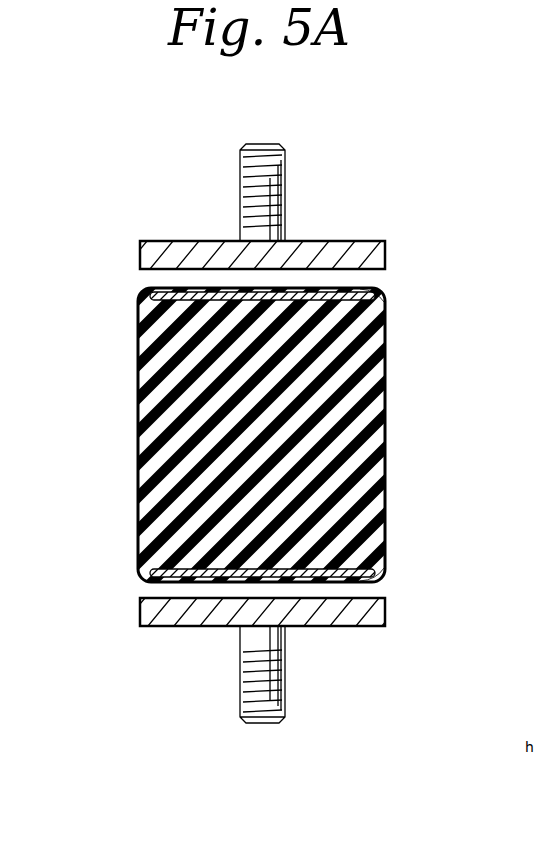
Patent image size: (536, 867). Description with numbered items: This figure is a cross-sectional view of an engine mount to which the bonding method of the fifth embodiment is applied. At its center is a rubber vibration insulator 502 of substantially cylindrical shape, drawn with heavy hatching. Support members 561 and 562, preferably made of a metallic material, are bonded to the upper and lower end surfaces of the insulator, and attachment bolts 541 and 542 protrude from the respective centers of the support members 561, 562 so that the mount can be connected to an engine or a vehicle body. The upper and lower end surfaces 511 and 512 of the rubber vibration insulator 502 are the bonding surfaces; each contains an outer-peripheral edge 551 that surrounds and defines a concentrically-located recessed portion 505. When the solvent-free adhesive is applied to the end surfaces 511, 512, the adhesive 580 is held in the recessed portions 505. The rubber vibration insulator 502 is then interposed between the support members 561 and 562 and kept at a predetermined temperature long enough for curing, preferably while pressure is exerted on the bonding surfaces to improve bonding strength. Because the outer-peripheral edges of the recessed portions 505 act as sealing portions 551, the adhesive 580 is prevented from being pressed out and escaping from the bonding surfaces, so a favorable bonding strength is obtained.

The attachment bolt 541 is at (262, 144).
The attachment bolt 542 is at (262, 724).
The support member 561 is at (152, 241).
The support member 562 is at (167, 627).
The rubber vibration insulator 502 is at (376, 402).
The upper end surface 511 is at (343, 291).
The lower end surface 512 is at (320, 572).
The outer-peripheral edge 551 is at (377, 300).
The recessed portion 505 is at (188, 287).
The adhesive 580 is at (192, 296).